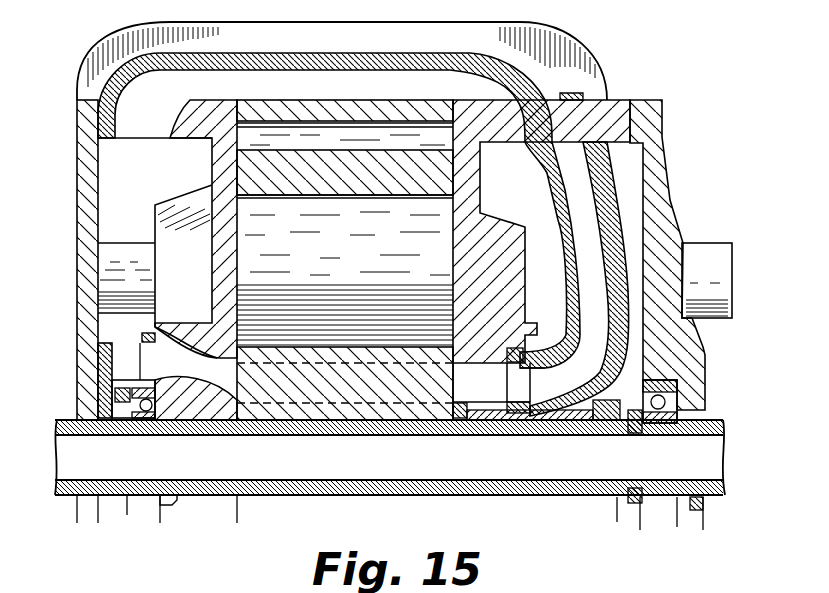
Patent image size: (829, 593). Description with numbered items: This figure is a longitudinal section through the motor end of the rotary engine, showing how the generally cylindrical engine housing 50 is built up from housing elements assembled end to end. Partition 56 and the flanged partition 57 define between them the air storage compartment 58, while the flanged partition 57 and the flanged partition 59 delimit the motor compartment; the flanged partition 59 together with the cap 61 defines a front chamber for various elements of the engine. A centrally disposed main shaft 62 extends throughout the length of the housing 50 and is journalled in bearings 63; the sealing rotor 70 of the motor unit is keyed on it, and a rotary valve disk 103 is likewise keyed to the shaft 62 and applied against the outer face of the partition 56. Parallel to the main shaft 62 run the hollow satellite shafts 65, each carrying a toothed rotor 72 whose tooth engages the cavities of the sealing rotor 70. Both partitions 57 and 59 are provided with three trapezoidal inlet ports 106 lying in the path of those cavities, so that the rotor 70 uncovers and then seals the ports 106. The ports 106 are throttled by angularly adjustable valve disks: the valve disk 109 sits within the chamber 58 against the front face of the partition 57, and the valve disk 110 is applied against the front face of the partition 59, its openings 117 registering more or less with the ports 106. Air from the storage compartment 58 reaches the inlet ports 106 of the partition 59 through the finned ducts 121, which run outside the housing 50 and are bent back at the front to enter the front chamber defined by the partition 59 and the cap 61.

The engine housing 50 is at (307, 114).
The partition 56 is at (82, 203).
The flanged partition 57 is at (240, 143).
The air storage compartment 58 is at (117, 163).
The flanged partition 59 is at (488, 228).
The cap 61 is at (662, 197).
The main shaft 62 is at (287, 487).
The bearings 63 is at (677, 390).
The hollow satellite shafts 65 is at (698, 257).
The sealing rotor 70 is at (365, 415).
The toothed rotor 72 is at (523, 384).
The rotary valve disk 103 is at (100, 366).
The inlet ports 106 is at (220, 358).
The valve disk 109 is at (143, 335).
The valve disk 110 is at (522, 396).
The openings 117 is at (557, 363).
The finned ducts 121 is at (478, 57).